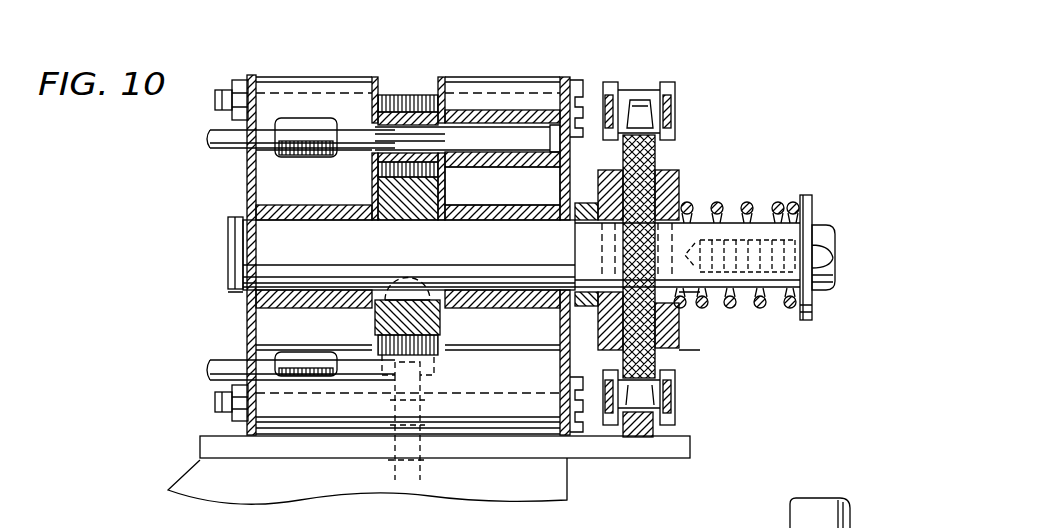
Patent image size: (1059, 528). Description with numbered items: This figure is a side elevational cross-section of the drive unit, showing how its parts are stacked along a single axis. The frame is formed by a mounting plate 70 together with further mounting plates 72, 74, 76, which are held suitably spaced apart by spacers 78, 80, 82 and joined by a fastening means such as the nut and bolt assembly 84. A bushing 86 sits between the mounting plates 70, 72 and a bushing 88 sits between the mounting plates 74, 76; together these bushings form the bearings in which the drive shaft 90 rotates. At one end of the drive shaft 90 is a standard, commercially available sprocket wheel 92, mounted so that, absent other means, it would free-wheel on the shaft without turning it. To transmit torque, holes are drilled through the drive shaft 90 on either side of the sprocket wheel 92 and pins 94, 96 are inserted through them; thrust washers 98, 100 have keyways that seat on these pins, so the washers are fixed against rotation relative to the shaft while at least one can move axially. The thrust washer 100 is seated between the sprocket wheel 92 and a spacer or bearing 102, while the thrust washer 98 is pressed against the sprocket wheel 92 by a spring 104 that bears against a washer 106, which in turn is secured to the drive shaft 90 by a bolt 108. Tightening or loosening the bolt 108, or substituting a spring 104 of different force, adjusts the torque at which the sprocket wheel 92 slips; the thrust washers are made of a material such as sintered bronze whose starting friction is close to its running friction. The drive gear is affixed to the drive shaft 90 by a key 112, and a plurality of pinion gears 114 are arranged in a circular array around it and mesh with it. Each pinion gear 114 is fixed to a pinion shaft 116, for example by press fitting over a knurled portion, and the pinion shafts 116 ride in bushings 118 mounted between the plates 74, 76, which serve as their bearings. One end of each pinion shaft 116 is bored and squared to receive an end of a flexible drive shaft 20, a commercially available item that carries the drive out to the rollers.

The flexible drive shaft 20 is at (222, 147).
The mounting plate 70 is at (253, 77).
The mounting plate 72 is at (381, 76).
The mounting plate 74 is at (442, 78).
The mounting plate 76 is at (563, 78).
The spacer 78 is at (293, 80).
The spacer 80 is at (411, 78).
The spacer 82 is at (497, 78).
The nut and bolt assembly 84 is at (575, 92).
The bushing 86 is at (270, 198).
The bushing 88 is at (543, 203).
The drive shaft 90 is at (371, 258).
The sprocket wheel 92 is at (653, 158).
The pin 94 is at (687, 300).
The pin 96 is at (584, 319).
The thrust washer 98 is at (668, 182).
The thrust washer 100 is at (597, 180).
The spacer or bearing 102 is at (573, 220).
The spring 104 is at (744, 312).
The washer 106 is at (806, 330).
The bolt 108 is at (822, 258).
The key 112 is at (410, 297).
The pinion gear 114 is at (385, 105).
The pinion shaft 116 is at (287, 158).
The bushing 118 is at (480, 158).